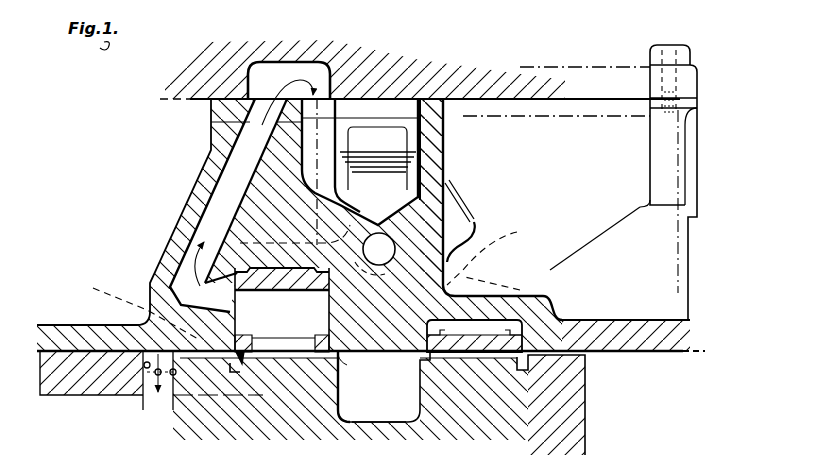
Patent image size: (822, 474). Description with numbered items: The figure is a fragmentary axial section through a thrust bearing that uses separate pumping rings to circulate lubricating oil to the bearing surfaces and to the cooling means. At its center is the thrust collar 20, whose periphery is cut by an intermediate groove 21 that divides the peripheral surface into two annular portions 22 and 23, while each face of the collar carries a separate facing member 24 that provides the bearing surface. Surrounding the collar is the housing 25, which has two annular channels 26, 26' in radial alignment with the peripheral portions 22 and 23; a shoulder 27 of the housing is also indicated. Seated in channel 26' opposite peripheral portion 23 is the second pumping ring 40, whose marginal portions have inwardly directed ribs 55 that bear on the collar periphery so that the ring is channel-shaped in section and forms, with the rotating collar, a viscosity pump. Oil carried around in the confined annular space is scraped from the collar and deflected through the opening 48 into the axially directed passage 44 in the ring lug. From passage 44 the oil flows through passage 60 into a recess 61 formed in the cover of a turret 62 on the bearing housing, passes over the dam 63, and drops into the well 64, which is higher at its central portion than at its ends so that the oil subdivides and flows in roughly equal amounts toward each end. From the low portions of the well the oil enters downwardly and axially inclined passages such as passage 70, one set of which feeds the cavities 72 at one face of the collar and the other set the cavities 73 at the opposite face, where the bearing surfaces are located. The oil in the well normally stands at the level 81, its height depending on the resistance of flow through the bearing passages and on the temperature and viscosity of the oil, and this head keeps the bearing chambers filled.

The thrust collar 20 is at (440, 409).
The intermediate groove 21 is at (368, 425).
The annular portion 22 is at (453, 359).
The annular portion 23 is at (312, 358).
The facing member 24 is at (184, 412).
The housing 25 is at (604, 331).
The annular channel 26 is at (474, 306).
The annular channel 26' is at (282, 310).
The shoulder 27 is at (546, 316).
The second pumping ring 40 is at (246, 362).
The axially directed passage 44 is at (262, 309).
The opening 48 is at (281, 350).
The inwardly directed rib 55 is at (240, 360).
The passage 60 is at (222, 202).
The recess 61 is at (273, 72).
The turret 62 is at (447, 127).
The dam 63 is at (300, 108).
The well 64 is at (380, 228).
The inclined passage 70 is at (496, 244).
The cavity 72 is at (150, 388).
The cavity 73 is at (585, 350).
The oil level 81 is at (378, 158).